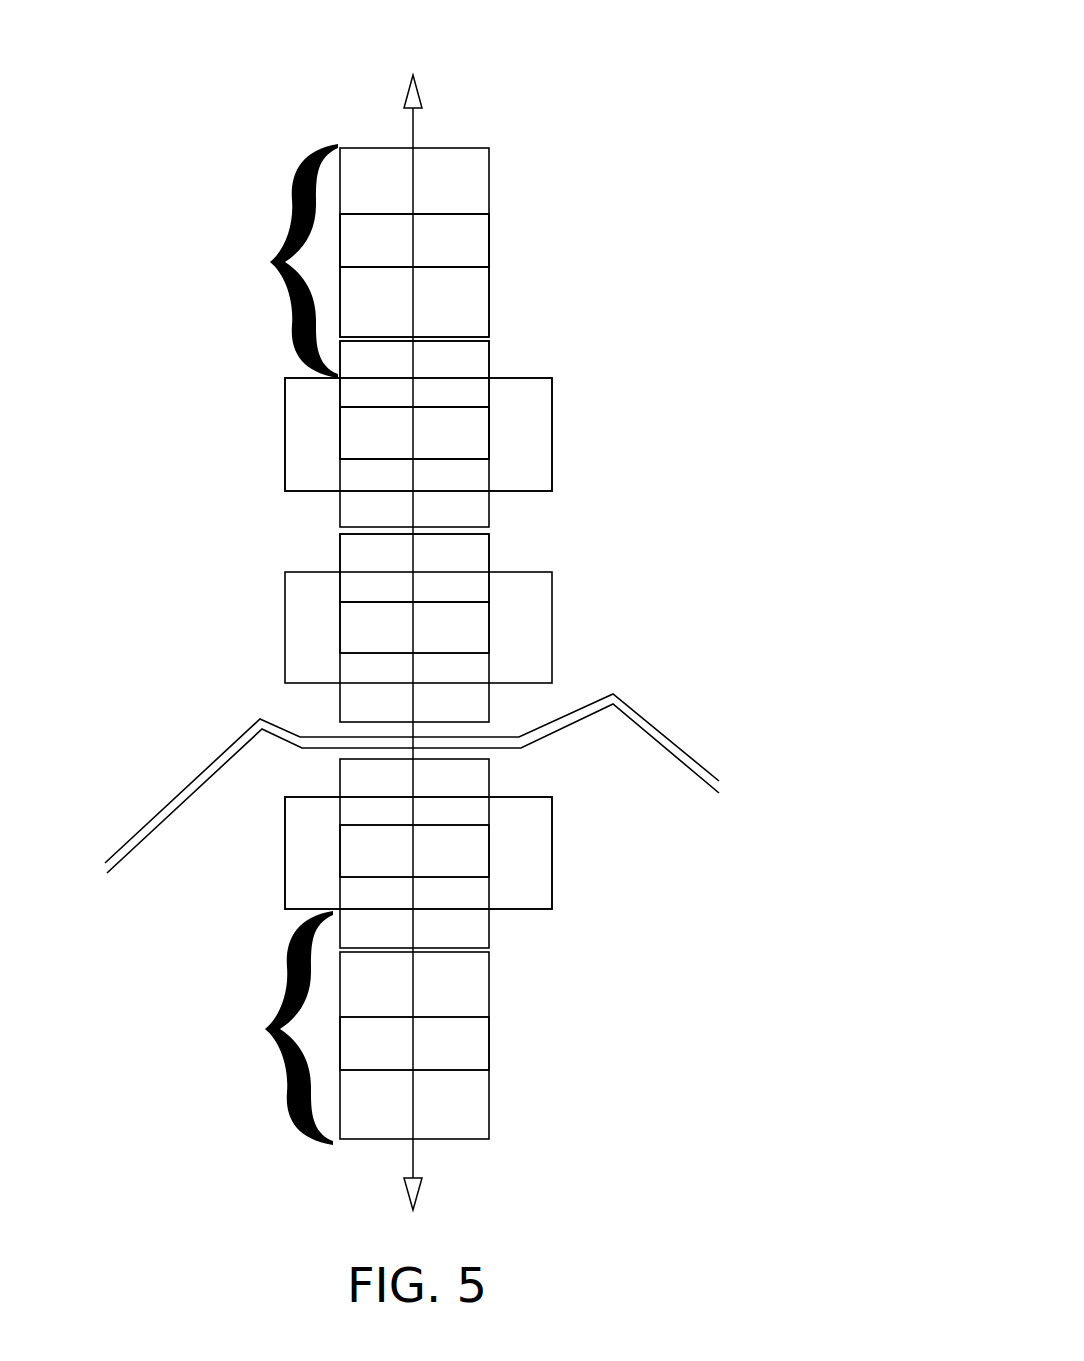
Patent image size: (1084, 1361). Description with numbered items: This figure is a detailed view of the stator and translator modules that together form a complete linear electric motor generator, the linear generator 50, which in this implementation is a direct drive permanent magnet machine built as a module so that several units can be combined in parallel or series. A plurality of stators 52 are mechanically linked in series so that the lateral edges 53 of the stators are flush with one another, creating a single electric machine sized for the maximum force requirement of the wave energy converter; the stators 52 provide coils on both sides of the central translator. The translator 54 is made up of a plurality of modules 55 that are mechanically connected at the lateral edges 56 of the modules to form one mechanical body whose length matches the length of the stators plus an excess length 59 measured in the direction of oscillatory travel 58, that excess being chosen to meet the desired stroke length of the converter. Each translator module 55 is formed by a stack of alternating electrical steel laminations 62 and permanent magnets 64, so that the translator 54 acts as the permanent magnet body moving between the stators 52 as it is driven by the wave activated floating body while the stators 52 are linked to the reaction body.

The linear generator 50 is at (752, 160).
The stator 52 is at (307, 418).
The lateral edge of the stator 53 is at (285, 440).
The translator 54 is at (453, 113).
The translator module 55 is at (491, 220).
The lateral edge of the module 56 is at (338, 185).
The direction of oscillatory travel 58 is at (415, 1163).
The excess length 59 is at (270, 262).
The electrical steel lamination 62 is at (473, 303).
The permanent magnet 64 is at (473, 239).